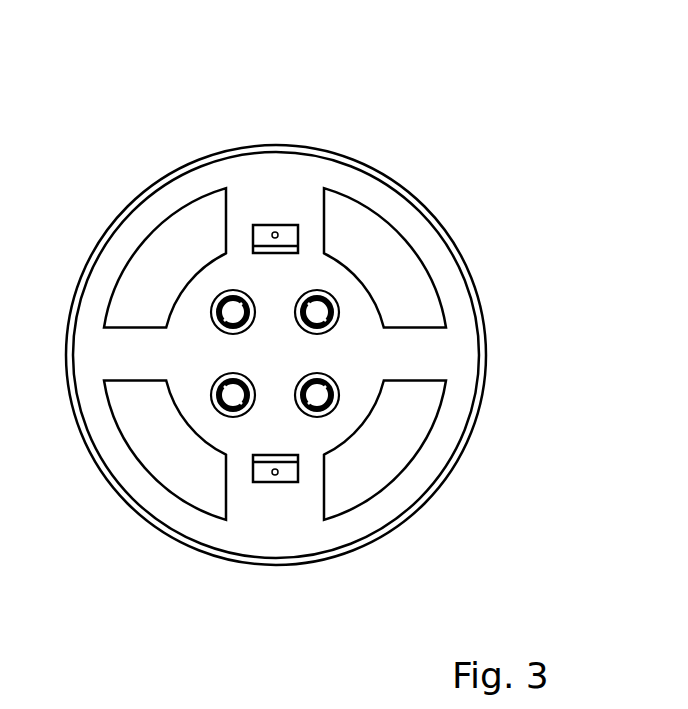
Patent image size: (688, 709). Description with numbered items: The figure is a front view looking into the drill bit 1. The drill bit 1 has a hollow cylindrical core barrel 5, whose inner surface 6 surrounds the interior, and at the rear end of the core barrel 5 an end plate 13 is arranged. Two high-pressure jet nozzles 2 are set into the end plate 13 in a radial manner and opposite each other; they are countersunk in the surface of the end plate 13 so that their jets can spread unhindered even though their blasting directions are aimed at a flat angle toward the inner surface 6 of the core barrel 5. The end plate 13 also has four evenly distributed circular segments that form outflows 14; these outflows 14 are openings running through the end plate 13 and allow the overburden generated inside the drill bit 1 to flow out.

The drill bit 1 is at (322, 343).
The jet nozzles 2 is at (275, 235).
The core barrel 5 is at (484, 383).
The inner surface 6 is at (409, 513).
The end plate 13 is at (254, 365).
The outflows 14 is at (398, 463).